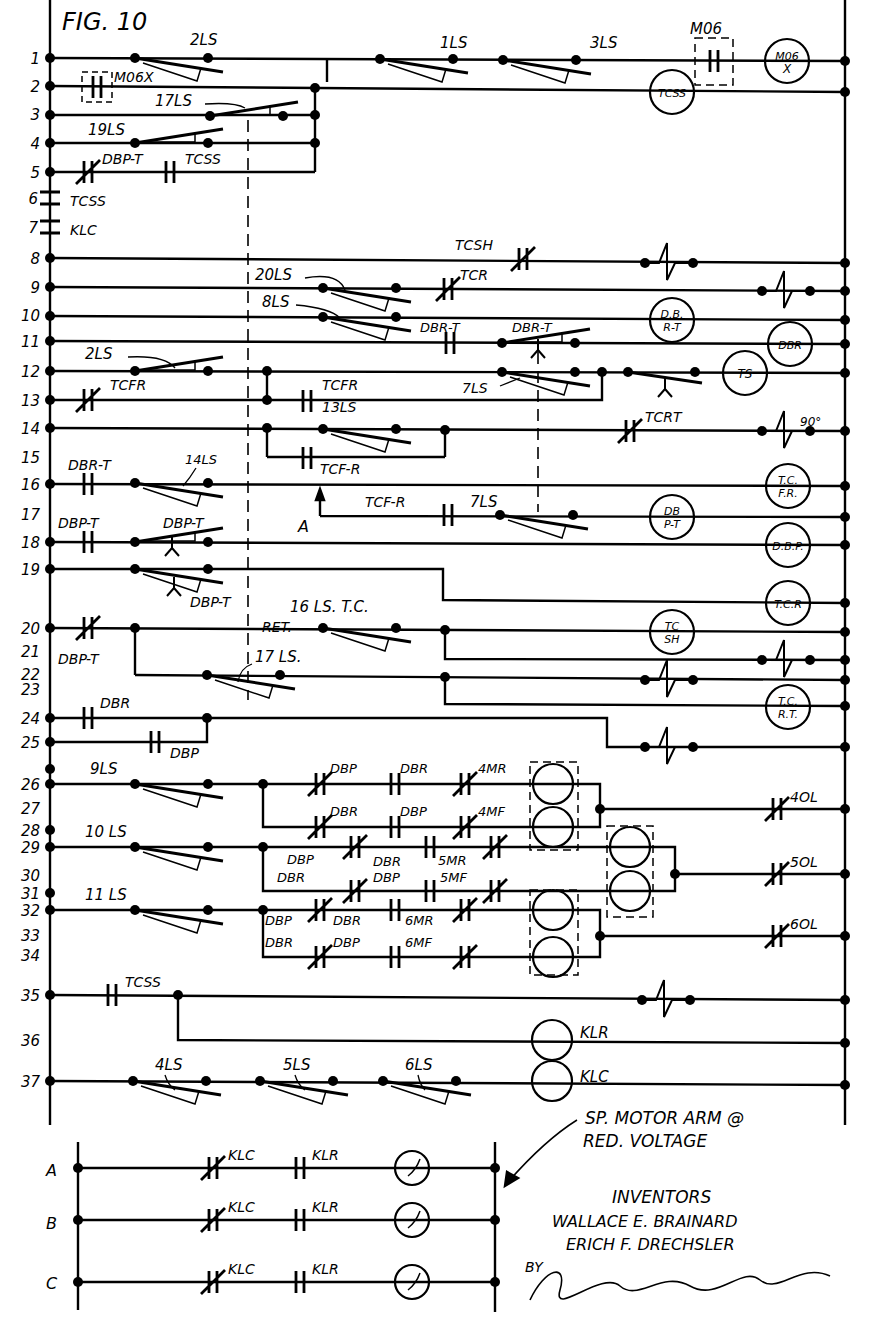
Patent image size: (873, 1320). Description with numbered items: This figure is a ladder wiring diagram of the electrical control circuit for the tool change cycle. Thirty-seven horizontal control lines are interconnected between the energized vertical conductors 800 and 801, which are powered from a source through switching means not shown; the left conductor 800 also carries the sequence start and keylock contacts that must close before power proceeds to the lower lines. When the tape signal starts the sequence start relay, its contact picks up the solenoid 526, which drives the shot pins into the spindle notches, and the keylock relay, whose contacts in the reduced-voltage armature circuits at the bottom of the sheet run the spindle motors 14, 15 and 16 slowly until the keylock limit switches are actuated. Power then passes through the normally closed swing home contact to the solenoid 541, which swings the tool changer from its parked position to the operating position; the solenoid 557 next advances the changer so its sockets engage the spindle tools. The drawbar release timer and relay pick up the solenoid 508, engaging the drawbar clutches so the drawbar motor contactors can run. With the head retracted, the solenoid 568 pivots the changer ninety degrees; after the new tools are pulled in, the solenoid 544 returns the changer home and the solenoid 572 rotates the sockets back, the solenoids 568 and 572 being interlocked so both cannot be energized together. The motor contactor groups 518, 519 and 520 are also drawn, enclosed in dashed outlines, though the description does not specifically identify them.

The energized vertical conductor 800 is at (50, 1052).
The energized vertical conductor 801 is at (845, 172).
The solenoid 541 is at (670, 250).
The solenoid 557 is at (782, 288).
The solenoid 568 is at (770, 429).
The solenoid 544 is at (778, 652).
The solenoid 572 is at (670, 688).
The solenoid 508 is at (680, 752).
The solenoid 526 is at (690, 996).
The motor forward/reverse relay pair 4MF 4MR 518 is at (578, 775).
The motor forward/reverse relay pair 5MF 5MR 519 is at (655, 840).
The motor forward/reverse relay pair 6MF 6MR 520 is at (578, 972).
The spindle motor 14 is at (426, 1162).
The spindle motor 15 is at (426, 1214).
The spindle motor 16 is at (426, 1276).